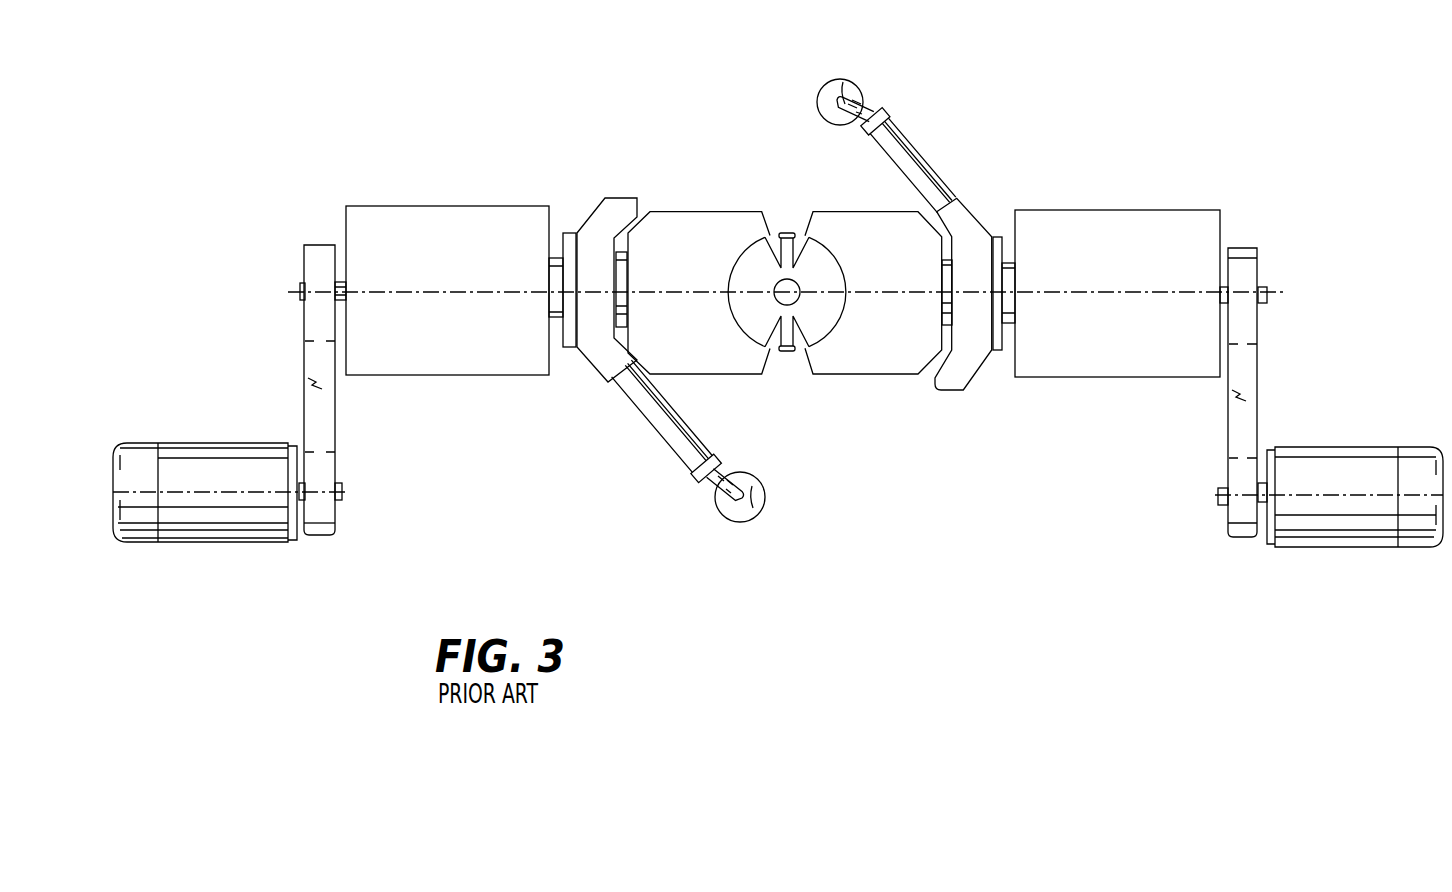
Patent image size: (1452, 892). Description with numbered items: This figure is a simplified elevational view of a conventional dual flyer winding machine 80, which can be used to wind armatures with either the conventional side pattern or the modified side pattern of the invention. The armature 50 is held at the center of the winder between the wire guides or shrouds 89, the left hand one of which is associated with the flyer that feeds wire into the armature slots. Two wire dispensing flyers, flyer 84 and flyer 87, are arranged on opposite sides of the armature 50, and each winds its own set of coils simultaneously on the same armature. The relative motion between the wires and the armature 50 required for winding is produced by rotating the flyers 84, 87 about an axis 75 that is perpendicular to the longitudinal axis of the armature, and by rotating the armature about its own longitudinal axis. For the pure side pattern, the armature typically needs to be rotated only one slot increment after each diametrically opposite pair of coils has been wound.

The dual flyer winding machine 80 is at (522, 165).
The axis 75 is at (422, 289).
The wire guide or shroud 89 is at (706, 216).
The armature 50 is at (818, 328).
The flyer 84 is at (665, 428).
The flyer 87 is at (897, 128).